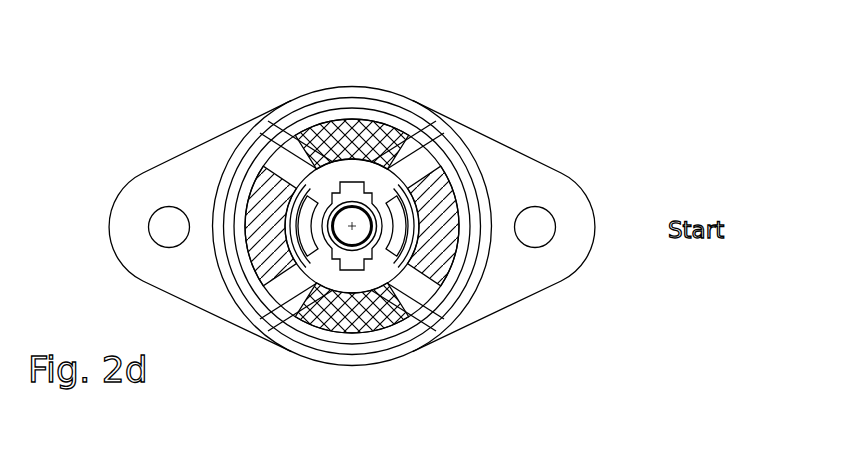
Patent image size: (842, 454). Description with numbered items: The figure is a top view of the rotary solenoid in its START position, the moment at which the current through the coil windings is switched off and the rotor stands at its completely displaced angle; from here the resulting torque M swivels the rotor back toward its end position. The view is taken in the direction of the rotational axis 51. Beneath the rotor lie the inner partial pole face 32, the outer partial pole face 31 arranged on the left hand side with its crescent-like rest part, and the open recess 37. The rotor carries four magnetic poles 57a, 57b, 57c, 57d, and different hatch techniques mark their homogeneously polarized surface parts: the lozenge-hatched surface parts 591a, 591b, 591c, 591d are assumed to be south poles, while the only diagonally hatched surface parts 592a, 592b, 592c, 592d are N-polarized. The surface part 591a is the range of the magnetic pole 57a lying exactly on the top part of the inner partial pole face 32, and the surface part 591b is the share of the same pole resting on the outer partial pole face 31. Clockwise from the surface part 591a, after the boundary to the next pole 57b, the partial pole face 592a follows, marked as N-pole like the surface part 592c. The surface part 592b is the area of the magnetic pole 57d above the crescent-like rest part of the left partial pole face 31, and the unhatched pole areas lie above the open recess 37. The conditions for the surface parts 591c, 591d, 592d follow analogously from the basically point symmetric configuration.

The outer partial pole face 31 is at (218, 262).
The inner partial pole face 32 is at (350, 224).
The open recess 37 is at (300, 162).
The rotational axis 51 is at (252, 119).
The magnetic pole 57a is at (340, 118).
The magnetic pole 57b is at (453, 207).
The magnetic pole 57c is at (418, 330).
The magnetic pole 57d is at (275, 288).
The surface part 591a is at (393, 135).
The partial pole face 592a is at (432, 160).
The surface part 591b is at (268, 195).
The surface part 592b is at (248, 232).
The surface part 591c is at (357, 322).
The surface part 592c is at (280, 300).
The surface part 591d is at (452, 297).
The surface part 592d is at (457, 252).
The resulting torque M is at (276, 63).